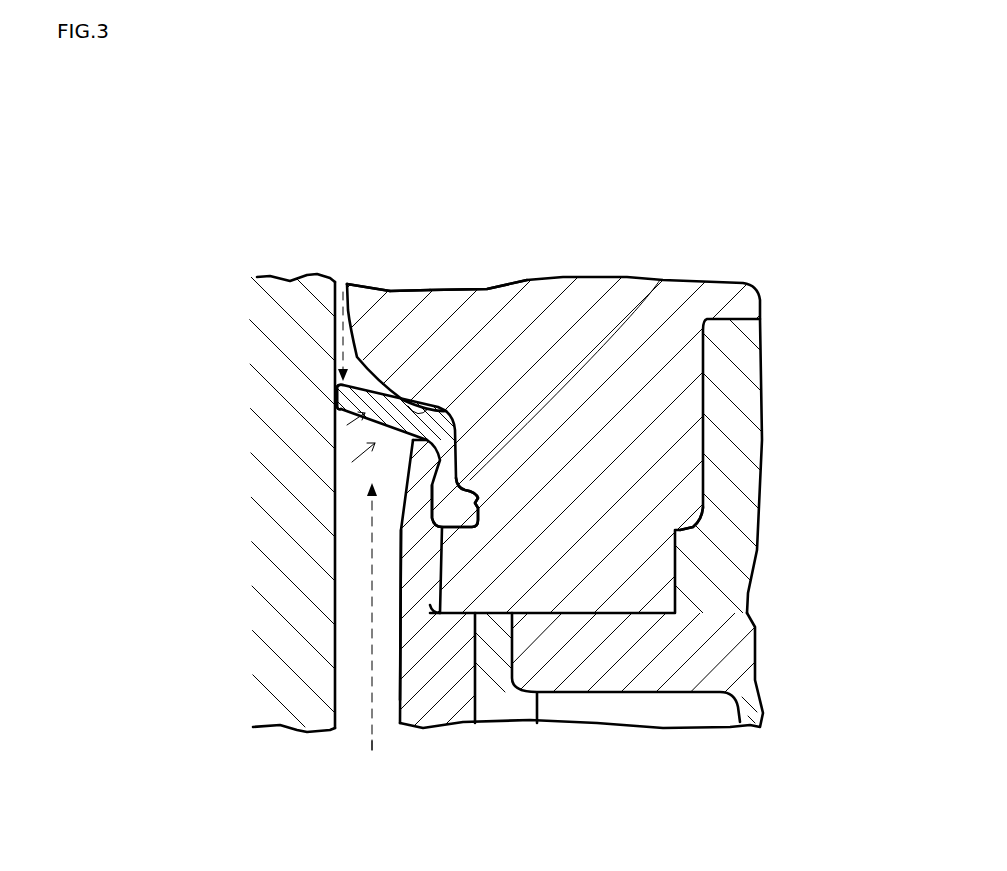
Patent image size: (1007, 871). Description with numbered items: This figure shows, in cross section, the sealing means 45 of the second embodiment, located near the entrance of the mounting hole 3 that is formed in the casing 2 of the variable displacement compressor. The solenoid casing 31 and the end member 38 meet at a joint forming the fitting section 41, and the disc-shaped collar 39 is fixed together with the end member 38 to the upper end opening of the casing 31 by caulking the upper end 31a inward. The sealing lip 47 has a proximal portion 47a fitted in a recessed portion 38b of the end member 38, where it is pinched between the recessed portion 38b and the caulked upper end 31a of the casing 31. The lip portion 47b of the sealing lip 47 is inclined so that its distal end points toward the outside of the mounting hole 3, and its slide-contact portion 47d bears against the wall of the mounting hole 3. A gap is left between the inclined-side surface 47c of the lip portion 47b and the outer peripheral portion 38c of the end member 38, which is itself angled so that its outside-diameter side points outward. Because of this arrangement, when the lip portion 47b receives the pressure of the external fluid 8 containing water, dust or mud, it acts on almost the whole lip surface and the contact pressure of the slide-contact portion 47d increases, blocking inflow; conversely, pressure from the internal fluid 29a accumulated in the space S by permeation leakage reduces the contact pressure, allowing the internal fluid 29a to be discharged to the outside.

The casing 2 is at (290, 278).
The mounting hole 3 is at (338, 548).
The external fluid 8 is at (340, 318).
The internal fluid 29a is at (367, 690).
The casing 31 is at (423, 727).
The upper end 31a is at (410, 465).
The end member 38 is at (623, 283).
The recessed portion 38b is at (478, 492).
The outer peripheral portion 38c is at (485, 290).
The collar 39 is at (745, 447).
The fitting section 41 is at (660, 280).
The sealing means 45 is at (337, 497).
The sealing lip 47 is at (333, 460).
The proximal portion 47a is at (460, 513).
The lip portion 47b is at (367, 287).
The inclined-side surface 47c is at (418, 290).
The slide-contact portion 47d is at (330, 388).
The space S is at (353, 638).